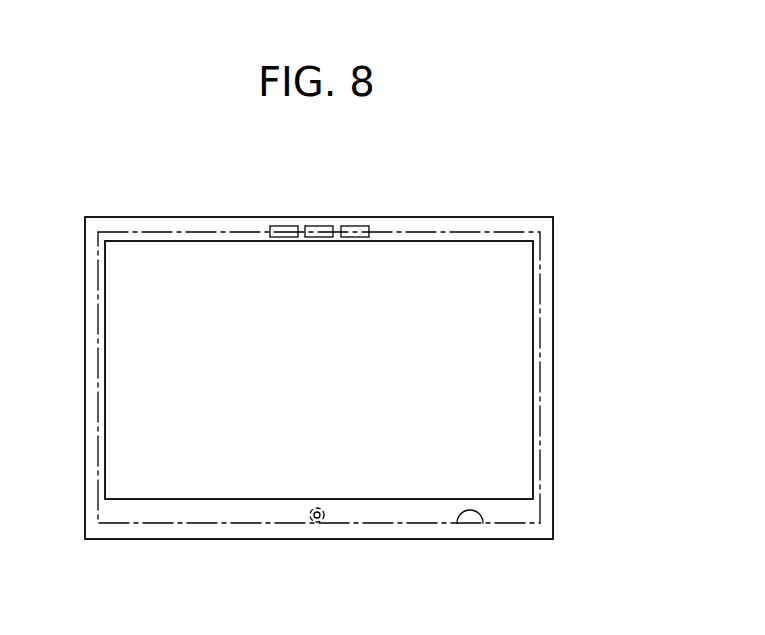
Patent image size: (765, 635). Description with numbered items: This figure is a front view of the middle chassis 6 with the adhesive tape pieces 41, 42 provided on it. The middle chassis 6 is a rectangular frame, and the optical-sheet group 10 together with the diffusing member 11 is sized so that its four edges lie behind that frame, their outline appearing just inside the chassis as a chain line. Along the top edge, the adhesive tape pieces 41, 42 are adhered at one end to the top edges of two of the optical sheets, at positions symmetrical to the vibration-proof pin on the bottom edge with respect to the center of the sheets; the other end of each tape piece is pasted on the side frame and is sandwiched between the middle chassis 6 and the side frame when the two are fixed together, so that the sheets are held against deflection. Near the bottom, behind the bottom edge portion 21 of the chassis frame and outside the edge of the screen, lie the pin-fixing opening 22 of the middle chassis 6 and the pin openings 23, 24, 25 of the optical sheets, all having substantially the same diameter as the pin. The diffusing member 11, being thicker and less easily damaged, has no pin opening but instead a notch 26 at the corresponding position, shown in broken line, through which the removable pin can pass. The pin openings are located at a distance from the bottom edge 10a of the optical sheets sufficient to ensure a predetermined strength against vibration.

The middle chassis 6 is at (547, 300).
The optical-sheet group 10 is at (405, 377).
The diffusing member 11 is at (540, 427).
The bottom edge 10a is at (481, 528).
The bottom edge portion 21 is at (198, 510).
The pin-fixing opening 22 is at (368, 464).
The pin opening 23 is at (368, 464).
The pin opening 24 is at (368, 464).
The pin opening 25 is at (315, 510).
The notch 26 is at (326, 517).
The adhesive tape piece 41 is at (318, 230).
The adhesive tape piece 42 is at (283, 230).